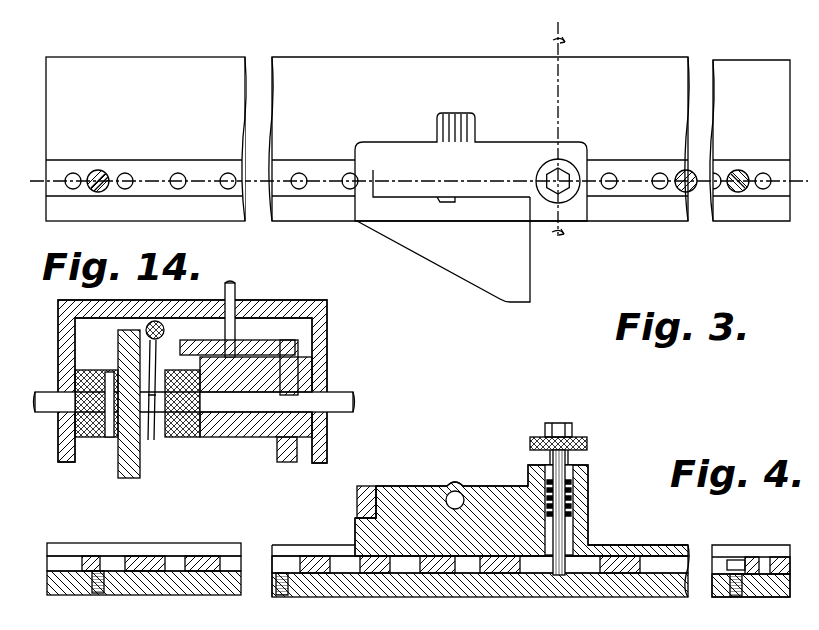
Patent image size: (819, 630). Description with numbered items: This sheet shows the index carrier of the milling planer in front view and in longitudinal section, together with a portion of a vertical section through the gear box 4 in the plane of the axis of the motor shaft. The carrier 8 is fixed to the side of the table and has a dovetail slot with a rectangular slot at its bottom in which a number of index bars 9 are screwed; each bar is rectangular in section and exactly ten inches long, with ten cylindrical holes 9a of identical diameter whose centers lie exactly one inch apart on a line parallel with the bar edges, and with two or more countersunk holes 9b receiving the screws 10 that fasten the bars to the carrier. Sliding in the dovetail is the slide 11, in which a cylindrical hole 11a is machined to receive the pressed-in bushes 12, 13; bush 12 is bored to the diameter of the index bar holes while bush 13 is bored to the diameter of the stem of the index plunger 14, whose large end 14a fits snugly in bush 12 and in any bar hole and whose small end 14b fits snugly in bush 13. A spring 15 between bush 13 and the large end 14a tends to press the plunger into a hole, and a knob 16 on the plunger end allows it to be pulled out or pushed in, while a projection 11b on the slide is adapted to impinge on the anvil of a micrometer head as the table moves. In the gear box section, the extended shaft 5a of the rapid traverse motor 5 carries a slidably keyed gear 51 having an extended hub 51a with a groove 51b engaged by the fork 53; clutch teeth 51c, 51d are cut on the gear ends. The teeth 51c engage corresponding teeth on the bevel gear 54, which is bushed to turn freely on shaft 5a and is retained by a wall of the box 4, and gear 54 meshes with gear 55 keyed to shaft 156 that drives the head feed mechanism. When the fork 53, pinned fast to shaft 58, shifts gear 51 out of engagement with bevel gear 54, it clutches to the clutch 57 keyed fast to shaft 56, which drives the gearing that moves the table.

In FIG. 3, the gear box 4 is at (414, 184).
In FIG. 14, the gear box 4 is at (58, 330).
In FIG. 3, the rapid traverse motor 5 is at (557, 138).
In FIG. 14, the rapid traverse motor 5 is at (215, 402).
In FIG. 14, the extended shaft of motor 5 5a is at (348, 412).
In FIG. 3, the carrier 8 is at (636, 58).
In FIG. 4, the carrier 8 is at (302, 545).
In FIG. 3, the index bars 9 is at (777, 205).
In FIG. 4, the index bars 9 is at (627, 576).
In FIG. 3, the cylindrical holes 9a is at (609, 205).
In FIG. 4, the cylindrical holes 9a is at (768, 558).
In FIG. 4, the countersunk holes 9b is at (274, 597).
In FIG. 3, the screws 10 is at (737, 200).
In FIG. 4, the screws 10 is at (735, 562).
In FIG. 3, the slide 11 is at (493, 146).
In FIG. 4, the slide 11 is at (431, 486).
In FIG. 4, the cylindrical hole 11a is at (535, 470).
In FIG. 3, the projection 11b is at (531, 275).
In FIG. 4, the projection 11b is at (377, 487).
In FIG. 4, the bush 12 is at (568, 545).
In FIG. 4, the bush 13 is at (580, 492).
In FIG. 4, the index plunger 14 is at (572, 522).
In FIG. 4, the large end of plunger 14a is at (568, 568).
In FIG. 4, the small end of plunger 14b is at (590, 470).
In FIG. 4, the spring 15 is at (545, 484).
In FIG. 4, the knob 16 is at (586, 442).
In FIG. 14, the gear 51 is at (122, 468).
In FIG. 14, the extended hub 51a is at (163, 442).
In FIG. 14, the groove 51b is at (152, 440).
In FIG. 14, the clutch teeth 51c is at (195, 440).
In FIG. 14, the clutch teeth 51d is at (107, 372).
In FIG. 14, the fork 53 is at (162, 342).
In FIG. 14, the bevel gear 54 is at (298, 355).
In FIG. 14, the gear 55 is at (270, 344).
In FIG. 14, the shaft 56 is at (46, 413).
In FIG. 14, the clutch 57 is at (72, 378).
In FIG. 14, the shaft 58 is at (155, 320).
In FIG. 14, the shaft 156 is at (240, 296).